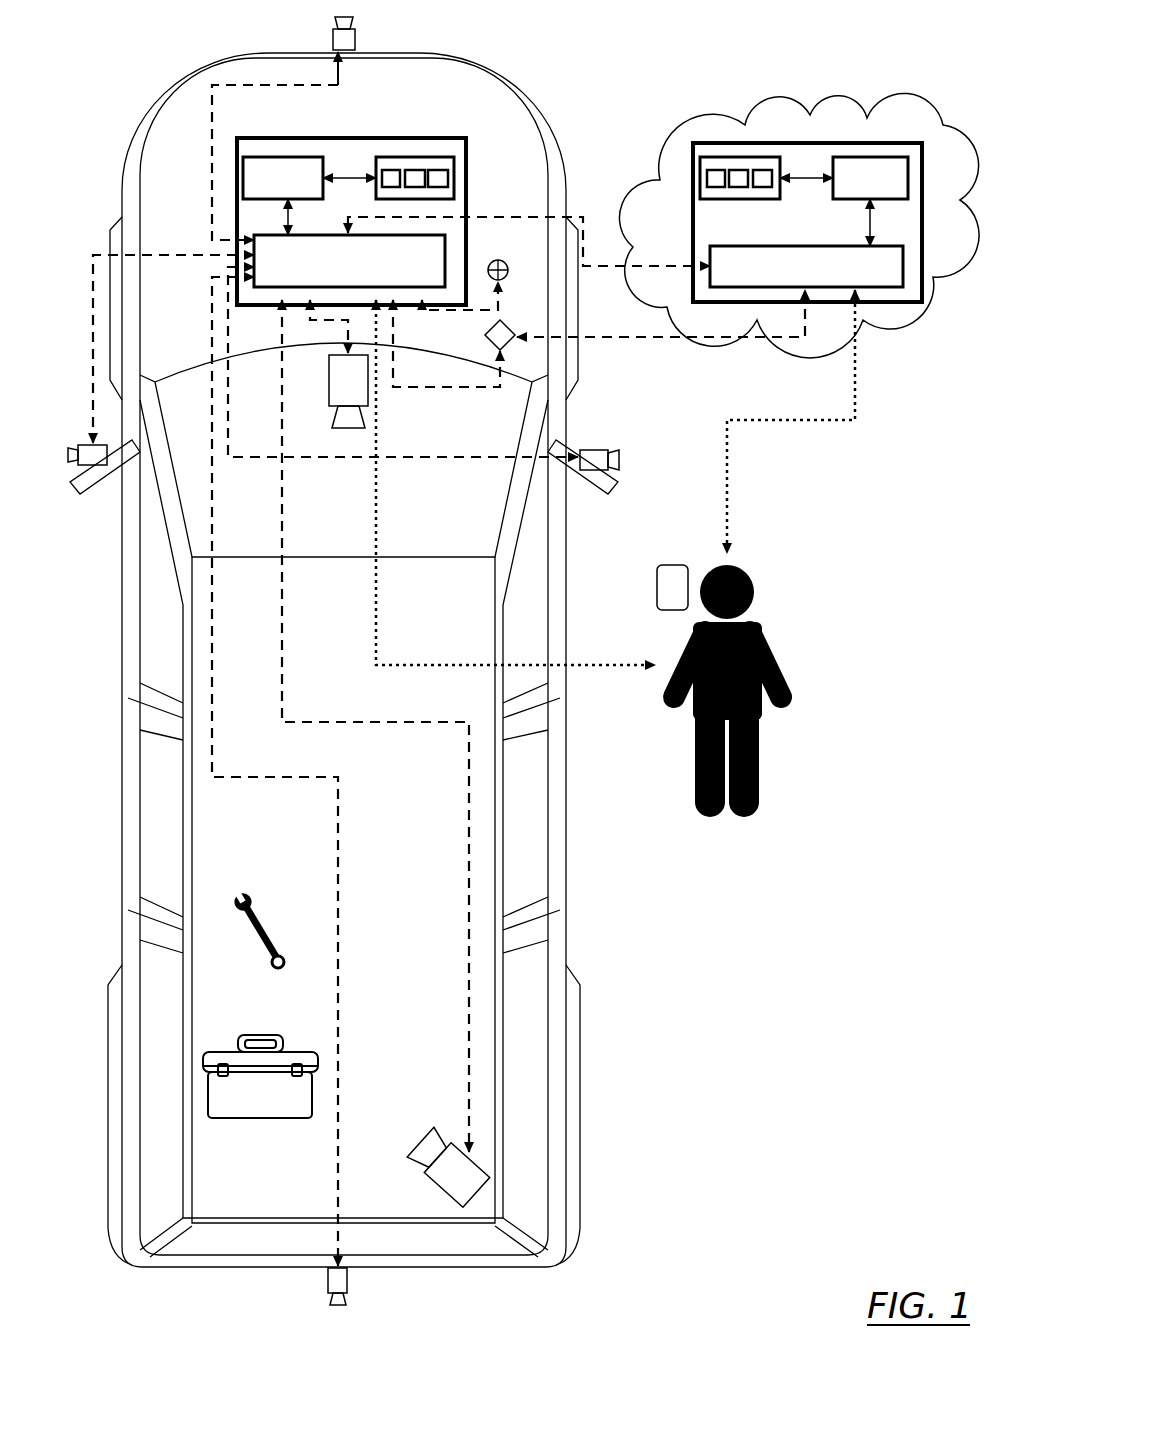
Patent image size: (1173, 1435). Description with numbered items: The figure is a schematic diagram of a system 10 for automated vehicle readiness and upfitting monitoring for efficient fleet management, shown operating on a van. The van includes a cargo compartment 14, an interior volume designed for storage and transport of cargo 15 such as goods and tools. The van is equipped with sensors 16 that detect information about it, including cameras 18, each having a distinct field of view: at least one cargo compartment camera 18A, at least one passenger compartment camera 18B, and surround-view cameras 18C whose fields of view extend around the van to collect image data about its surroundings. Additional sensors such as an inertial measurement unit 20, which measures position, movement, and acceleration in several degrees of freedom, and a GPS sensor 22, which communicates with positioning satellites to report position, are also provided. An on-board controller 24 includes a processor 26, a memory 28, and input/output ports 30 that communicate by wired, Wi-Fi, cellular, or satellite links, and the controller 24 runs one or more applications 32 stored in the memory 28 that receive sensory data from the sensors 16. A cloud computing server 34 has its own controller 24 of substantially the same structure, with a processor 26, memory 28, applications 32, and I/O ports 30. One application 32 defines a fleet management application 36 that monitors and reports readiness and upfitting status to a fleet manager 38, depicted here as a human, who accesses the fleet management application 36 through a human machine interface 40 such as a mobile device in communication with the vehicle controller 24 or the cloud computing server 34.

The system 10 is at (411, 660).
The cargo compartment 14 is at (423, 1010).
The cargo 15 is at (253, 1032).
The sensors 16 is at (415, 662).
The cameras 18 is at (402, 662).
The cargo compartment camera 18A is at (476, 1195).
The passenger compartment camera 18B is at (368, 398).
The surround-view cameras 18C is at (355, 43).
The inertial measurement unit 20 is at (498, 260).
The GPS sensor 22 is at (508, 345).
The controller 24 is at (579, 157).
The processor 26 is at (270, 191).
The memory 28 is at (603, 127).
The input/output ports 30 is at (337, 274).
The applications 32 is at (606, 165).
The cloud computing server 34 is at (903, 325).
The fleet management application 36 is at (448, 180).
The fleet manager 38 is at (786, 637).
The human machine interface 40 is at (660, 555).